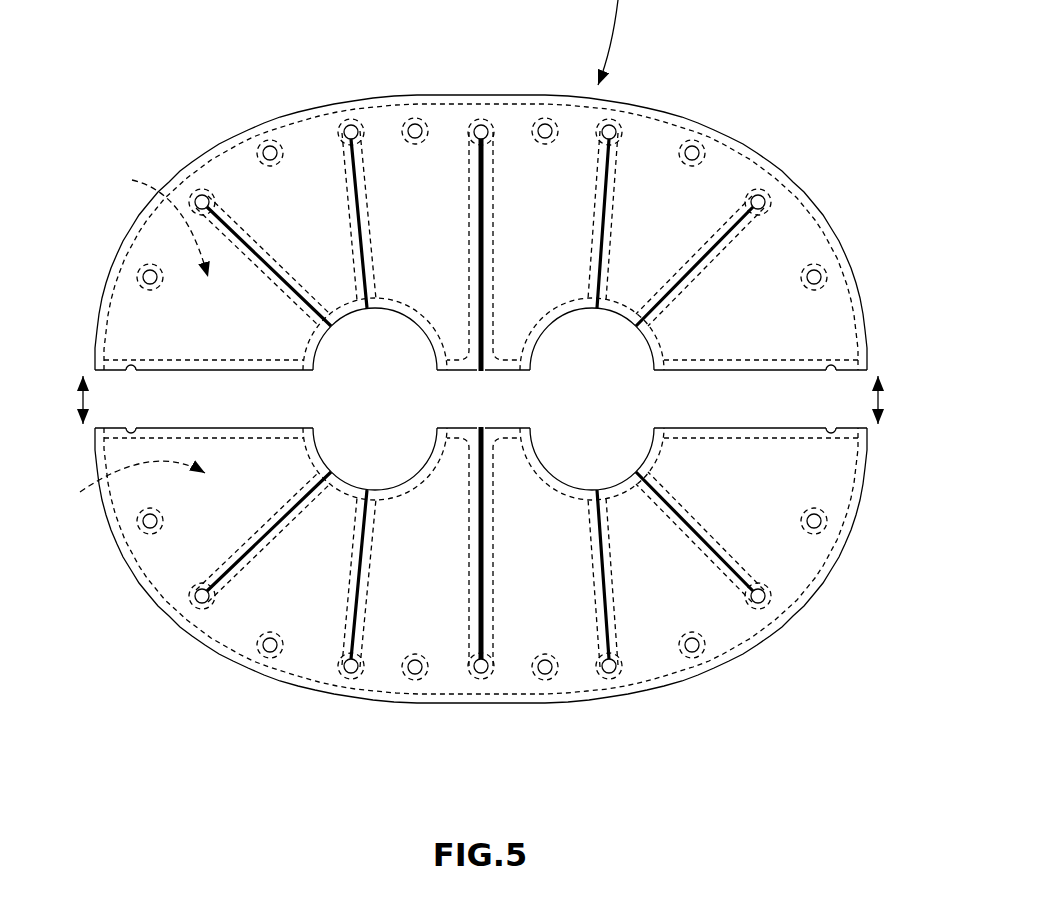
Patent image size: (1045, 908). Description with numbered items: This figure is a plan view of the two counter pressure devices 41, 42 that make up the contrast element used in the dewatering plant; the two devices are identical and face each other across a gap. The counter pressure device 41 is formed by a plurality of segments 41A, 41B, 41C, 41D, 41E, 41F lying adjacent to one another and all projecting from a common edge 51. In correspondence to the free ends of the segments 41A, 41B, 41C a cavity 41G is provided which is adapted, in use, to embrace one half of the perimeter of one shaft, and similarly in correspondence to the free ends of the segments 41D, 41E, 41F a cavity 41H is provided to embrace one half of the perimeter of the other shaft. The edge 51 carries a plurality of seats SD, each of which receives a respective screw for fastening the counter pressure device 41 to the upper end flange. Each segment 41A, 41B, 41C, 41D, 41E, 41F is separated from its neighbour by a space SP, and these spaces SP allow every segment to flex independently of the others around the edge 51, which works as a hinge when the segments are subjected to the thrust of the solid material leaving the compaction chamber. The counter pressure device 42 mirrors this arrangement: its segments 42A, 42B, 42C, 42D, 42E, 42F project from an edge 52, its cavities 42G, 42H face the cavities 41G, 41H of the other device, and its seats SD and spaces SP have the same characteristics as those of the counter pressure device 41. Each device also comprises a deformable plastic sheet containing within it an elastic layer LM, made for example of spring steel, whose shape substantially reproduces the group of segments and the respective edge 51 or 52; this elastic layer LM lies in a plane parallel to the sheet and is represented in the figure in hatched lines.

The counter pressure device 41 is at (652, 158).
The segment 41A is at (145, 316).
The segment 41B is at (318, 132).
The segment 41C is at (445, 128).
The segment 41D is at (573, 177).
The segment 41E is at (693, 207).
The segment 41F is at (750, 247).
The cavity 41G is at (355, 313).
The cavity 41H is at (603, 312).
The counter pressure device 42 is at (715, 598).
The segment 42A is at (200, 528).
The segment 42B is at (312, 613).
The segment 42C is at (442, 637).
The segment 42D is at (562, 623).
The segment 42E is at (655, 633).
The segment 42F is at (825, 490).
The cavity 42G is at (348, 477).
The cavity 42H is at (558, 478).
The common edge 51 is at (297, 120).
The edge 52 is at (393, 627).
The seat SD is at (270, 151).
The space SP is at (252, 237).
The elastic layer LM is at (128, 345).